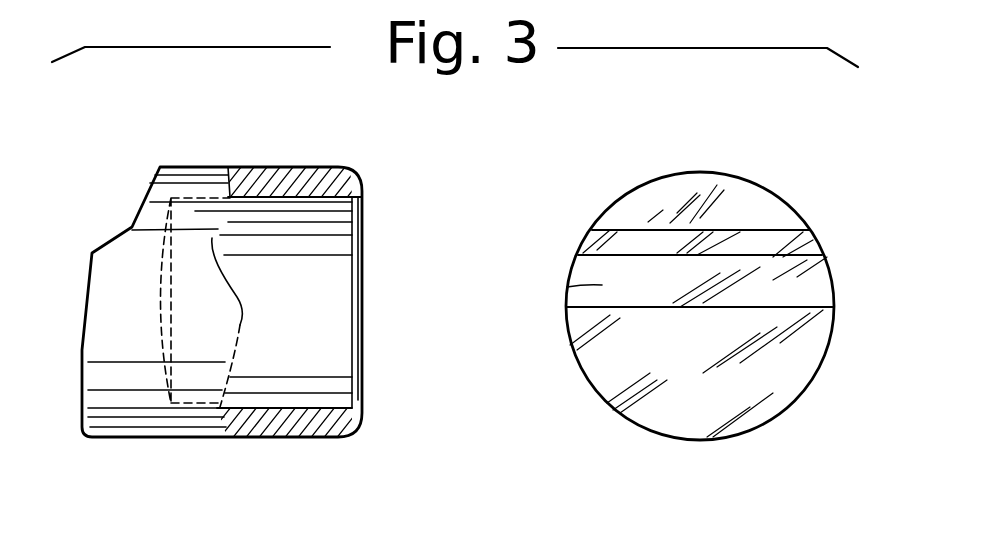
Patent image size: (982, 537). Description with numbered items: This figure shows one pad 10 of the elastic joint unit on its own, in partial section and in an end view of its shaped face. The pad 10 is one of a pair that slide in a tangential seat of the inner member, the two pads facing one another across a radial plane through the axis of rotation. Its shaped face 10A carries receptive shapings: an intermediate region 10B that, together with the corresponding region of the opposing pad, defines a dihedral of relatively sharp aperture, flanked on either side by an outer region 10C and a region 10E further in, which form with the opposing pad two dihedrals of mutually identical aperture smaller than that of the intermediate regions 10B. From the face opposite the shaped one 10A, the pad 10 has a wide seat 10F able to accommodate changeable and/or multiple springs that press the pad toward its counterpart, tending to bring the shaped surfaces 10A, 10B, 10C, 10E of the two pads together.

The pad 10 is at (184, 448).
The shaped face 10A is at (83, 358).
The intermediate region 10B is at (114, 236).
The outer region 10C is at (148, 187).
The inner region 10E is at (88, 268).
The wide seat 10F is at (337, 230).